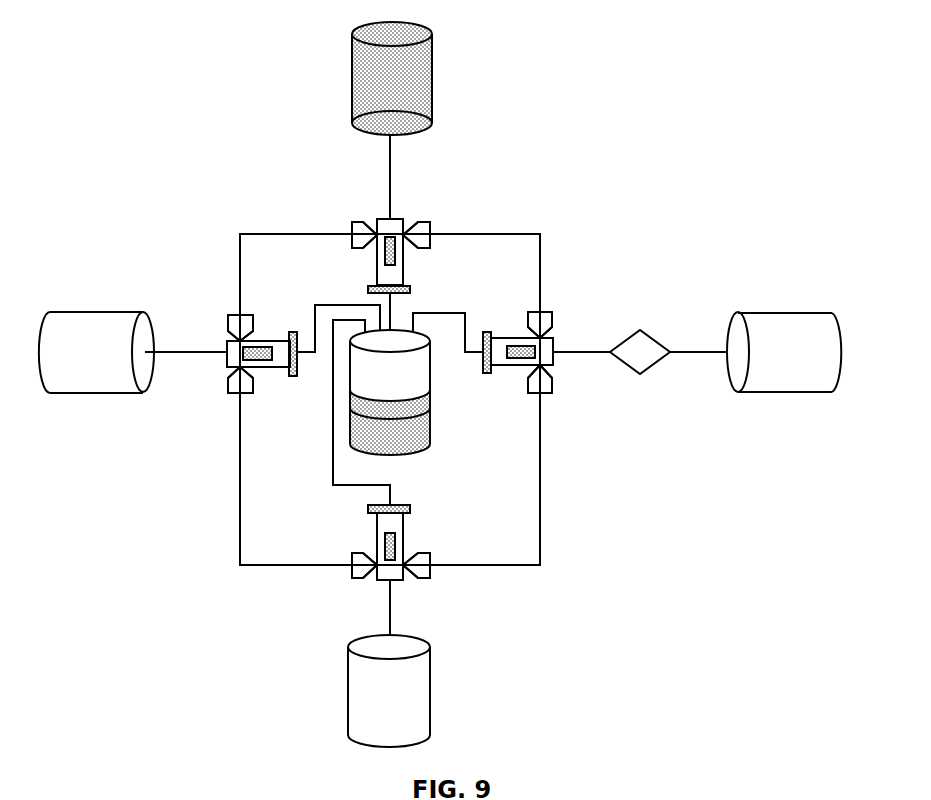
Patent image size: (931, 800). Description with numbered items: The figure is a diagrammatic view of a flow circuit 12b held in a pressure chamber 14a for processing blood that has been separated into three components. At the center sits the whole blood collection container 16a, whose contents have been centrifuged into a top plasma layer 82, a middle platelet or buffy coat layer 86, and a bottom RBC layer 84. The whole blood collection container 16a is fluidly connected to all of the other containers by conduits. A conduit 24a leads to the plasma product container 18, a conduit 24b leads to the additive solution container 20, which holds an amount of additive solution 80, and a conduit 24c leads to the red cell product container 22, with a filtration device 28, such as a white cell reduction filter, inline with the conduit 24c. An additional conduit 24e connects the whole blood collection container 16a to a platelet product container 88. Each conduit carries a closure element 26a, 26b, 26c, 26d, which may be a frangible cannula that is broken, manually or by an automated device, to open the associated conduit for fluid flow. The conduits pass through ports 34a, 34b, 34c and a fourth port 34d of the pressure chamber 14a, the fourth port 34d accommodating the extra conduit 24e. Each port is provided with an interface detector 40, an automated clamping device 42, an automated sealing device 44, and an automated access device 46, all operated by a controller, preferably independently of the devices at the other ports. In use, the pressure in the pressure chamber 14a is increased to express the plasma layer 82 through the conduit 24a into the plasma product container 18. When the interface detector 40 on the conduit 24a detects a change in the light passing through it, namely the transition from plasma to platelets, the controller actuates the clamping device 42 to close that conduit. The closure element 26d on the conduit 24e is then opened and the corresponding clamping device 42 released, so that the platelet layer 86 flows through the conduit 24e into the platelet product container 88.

The additive solution container 20 is at (408, 24).
The additive solution 80 is at (415, 91).
The flow circuit 12b is at (380, 162).
The conduit 24b is at (392, 177).
The automated sealing device 44 is at (383, 222).
The interface detector 40 is at (420, 224).
The port 34b is at (440, 228).
The pressure chamber 14a is at (514, 231).
The automated access device 46 is at (353, 232).
The automated clamping device 42 is at (375, 287).
The closure element 26b is at (396, 250).
The plasma product container 18 is at (108, 313).
The conduit 24a is at (172, 350).
The closure element 26a is at (256, 346).
The port 34a is at (266, 378).
The closure element 26c is at (517, 345).
The filtration device 28 is at (641, 340).
The red cell product container 22 is at (790, 312).
The plasma layer 82 is at (415, 370).
The platelet layer 86 is at (432, 398).
The RBC layer 84 is at (432, 425).
The port 34c is at (508, 376).
The conduit 24c is at (600, 355).
The whole blood collection container 16a is at (425, 450).
The conduit 24e is at (332, 440).
The closure element 26d is at (398, 541).
The fourth port 34d is at (430, 547).
The platelet product container 88 is at (432, 676).